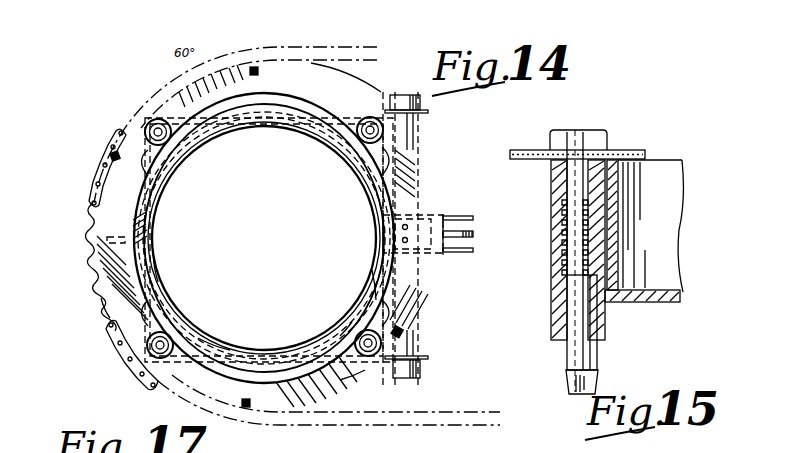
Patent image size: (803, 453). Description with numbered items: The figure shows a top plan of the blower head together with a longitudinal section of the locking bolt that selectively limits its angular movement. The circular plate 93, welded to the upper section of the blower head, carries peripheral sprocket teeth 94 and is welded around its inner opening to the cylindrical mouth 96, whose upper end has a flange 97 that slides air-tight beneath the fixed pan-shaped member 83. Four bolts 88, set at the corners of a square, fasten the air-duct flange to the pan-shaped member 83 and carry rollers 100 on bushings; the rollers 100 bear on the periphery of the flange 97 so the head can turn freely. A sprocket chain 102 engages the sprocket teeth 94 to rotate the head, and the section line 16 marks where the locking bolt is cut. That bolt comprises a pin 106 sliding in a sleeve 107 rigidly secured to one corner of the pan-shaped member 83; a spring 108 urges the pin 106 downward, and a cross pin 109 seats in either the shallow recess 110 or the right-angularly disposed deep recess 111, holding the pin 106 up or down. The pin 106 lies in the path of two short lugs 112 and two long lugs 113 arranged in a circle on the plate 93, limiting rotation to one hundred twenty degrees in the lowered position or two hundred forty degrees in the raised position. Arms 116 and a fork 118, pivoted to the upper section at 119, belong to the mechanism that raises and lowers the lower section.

In FIG. 14, the section line 16- 16 is at (125, 80).
In FIG. 15, the pan-shaped member 83 is at (673, 303).
In FIG. 14, the bolts 88 is at (362, 128).
In FIG. 14, the circular plate 93 is at (100, 311).
In FIG. 14, the sprocket teeth 94 is at (92, 294).
In FIG. 14, the cylindrical mouth 96 is at (207, 342).
In FIG. 14, the flange 97 is at (372, 283).
In FIG. 14, the rollers 100 is at (358, 320).
In FIG. 14, the sprocket chain 102 is at (106, 337).
In FIG. 14, the pin 106 is at (166, 291).
In FIG. 15, the pin 106 is at (566, 316).
In FIG. 15, the sleeve 107 is at (607, 323).
In FIG. 15, the spring 108 is at (562, 245).
In FIG. 15, the cross pin 109 is at (512, 159).
In FIG. 15, the shallow recess 110 is at (578, 131).
In FIG. 15, the deep recess 111 is at (600, 139).
In FIG. 14, the short lugs 112 is at (111, 158).
In FIG. 14, the long lugs 113 is at (257, 66).
In FIG. 14, the arms 116 is at (466, 253).
In FIG. 14, the fork 118 is at (474, 234).
In FIG. 14, the pivot 119 is at (417, 379).